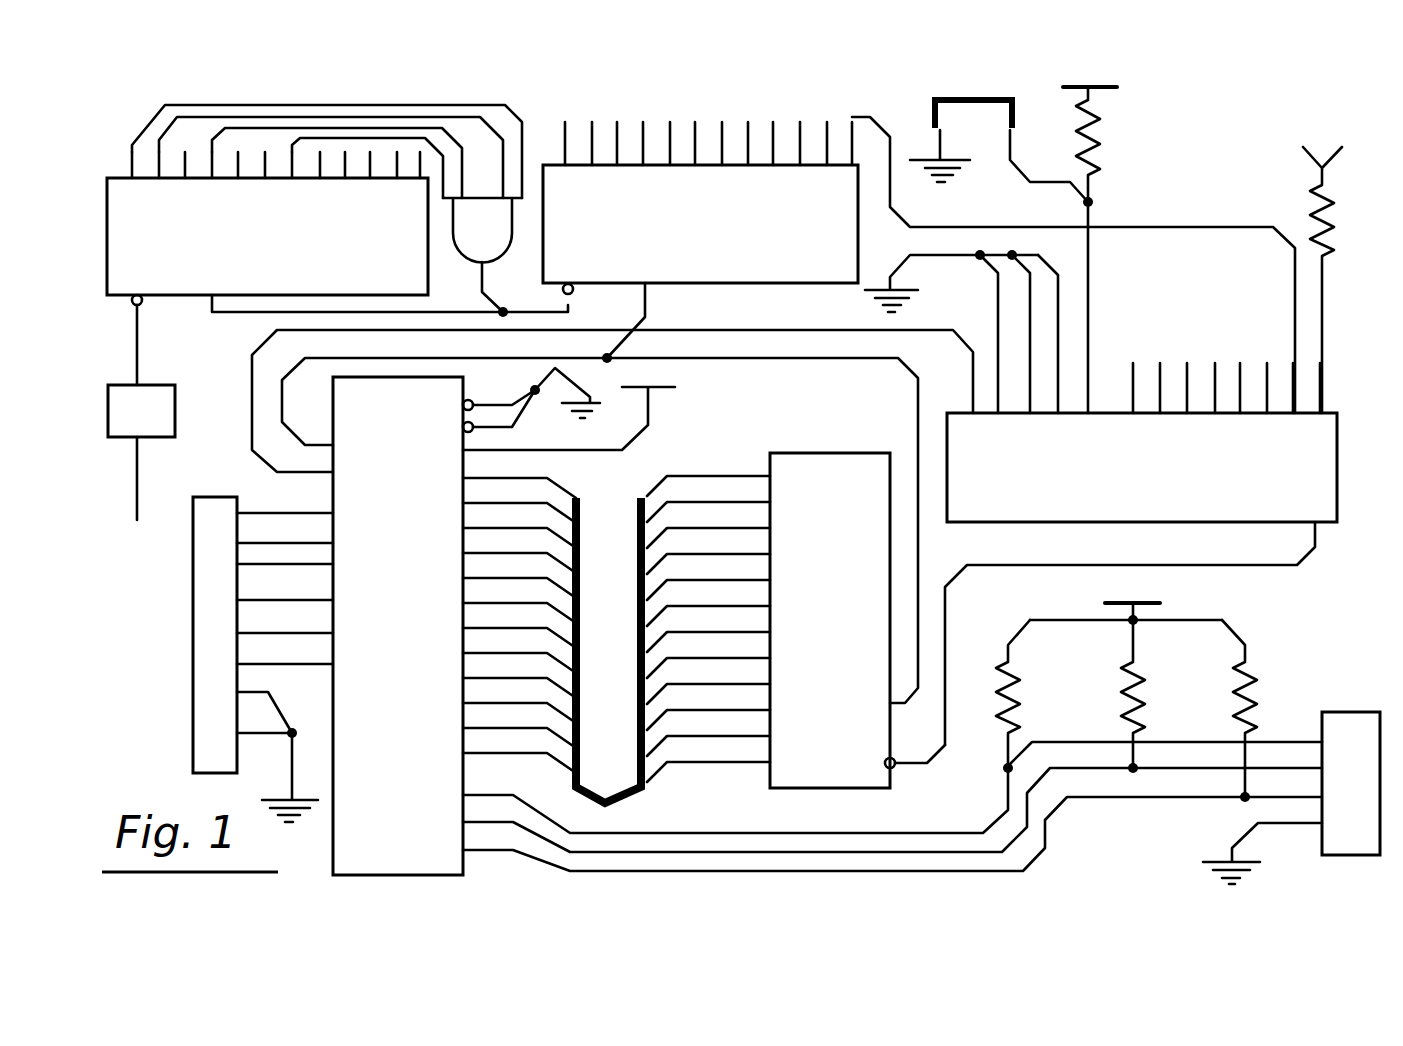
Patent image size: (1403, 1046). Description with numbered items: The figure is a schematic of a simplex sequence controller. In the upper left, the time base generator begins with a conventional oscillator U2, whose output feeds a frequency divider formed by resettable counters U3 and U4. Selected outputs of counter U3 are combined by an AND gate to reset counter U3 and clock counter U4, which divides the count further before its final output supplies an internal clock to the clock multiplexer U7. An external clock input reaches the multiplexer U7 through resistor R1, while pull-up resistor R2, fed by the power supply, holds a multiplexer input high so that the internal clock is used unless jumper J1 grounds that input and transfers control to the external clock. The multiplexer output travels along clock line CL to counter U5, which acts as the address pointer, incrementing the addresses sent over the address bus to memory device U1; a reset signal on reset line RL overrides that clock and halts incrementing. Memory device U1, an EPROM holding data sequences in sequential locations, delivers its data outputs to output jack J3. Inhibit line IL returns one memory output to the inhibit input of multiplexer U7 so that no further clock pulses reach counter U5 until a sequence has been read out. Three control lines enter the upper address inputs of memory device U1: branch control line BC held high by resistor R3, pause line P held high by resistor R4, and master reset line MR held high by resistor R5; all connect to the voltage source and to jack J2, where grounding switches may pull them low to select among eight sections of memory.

The memory device U1 is at (490, 617).
The oscillator U2 is at (141, 433).
The resettable counter U3 is at (339, 245).
The counter U4 is at (917, 265).
The counter U5 is at (796, 620).
The clock multiplexer U7 is at (1142, 456).
The jumper J1 is at (999, 131).
The jack J2 is at (1291, 776).
The output jack J3 is at (262, 636).
The resistor R1 is at (1306, 246).
The pull-up resistor R2 is at (1114, 236).
The resistor R3 is at (892, 726).
The resistor R4 is at (892, 714).
The pull-up resistor R5 is at (892, 745).
The inhibit line IL is at (700, 329).
The reset line RL is at (752, 360).
The clock line CL is at (967, 570).
The branch control line BC is at (775, 830).
The pause line P is at (922, 848).
The master reset line MR is at (1047, 822).